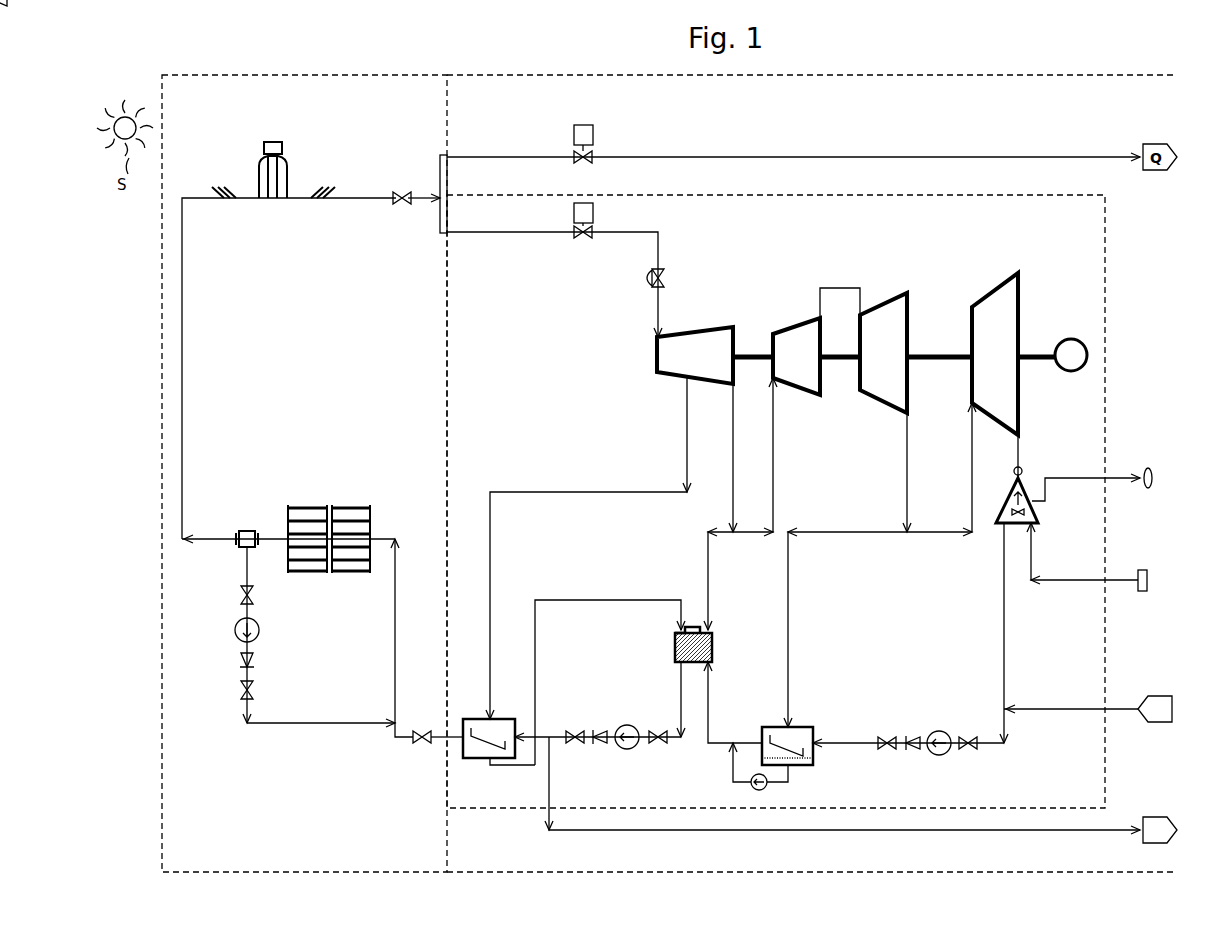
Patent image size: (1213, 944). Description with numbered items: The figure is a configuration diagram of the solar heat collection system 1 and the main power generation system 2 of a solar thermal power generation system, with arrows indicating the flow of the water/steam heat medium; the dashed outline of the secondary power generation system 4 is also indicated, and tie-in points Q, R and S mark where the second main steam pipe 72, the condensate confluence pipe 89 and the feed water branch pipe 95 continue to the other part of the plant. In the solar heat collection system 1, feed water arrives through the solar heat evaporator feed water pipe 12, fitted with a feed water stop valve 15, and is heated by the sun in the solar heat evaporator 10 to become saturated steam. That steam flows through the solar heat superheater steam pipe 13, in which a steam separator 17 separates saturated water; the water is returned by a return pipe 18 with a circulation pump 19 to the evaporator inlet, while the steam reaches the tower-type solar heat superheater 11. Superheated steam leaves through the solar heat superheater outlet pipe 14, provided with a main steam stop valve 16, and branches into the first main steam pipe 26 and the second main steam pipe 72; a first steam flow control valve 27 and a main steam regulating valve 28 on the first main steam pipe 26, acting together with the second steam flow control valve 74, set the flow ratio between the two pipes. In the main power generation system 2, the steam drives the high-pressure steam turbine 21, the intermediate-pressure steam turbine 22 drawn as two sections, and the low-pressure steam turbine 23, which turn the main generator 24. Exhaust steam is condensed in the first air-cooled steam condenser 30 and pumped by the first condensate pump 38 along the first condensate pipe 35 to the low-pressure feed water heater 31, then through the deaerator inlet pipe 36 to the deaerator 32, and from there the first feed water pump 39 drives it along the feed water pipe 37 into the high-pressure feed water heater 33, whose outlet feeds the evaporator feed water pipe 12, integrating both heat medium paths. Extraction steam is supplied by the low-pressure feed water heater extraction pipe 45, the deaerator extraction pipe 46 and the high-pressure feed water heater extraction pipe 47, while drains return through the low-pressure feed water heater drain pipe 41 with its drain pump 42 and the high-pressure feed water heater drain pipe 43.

The solar heat collection system 1 is at (353, 106).
The main power generation system 2 is at (821, 224).
The secondary power generation system 4 is at (821, 108).
The solar heat evaporator 10 is at (360, 504).
The solar heat superheater 11 is at (281, 141).
The solar heat evaporator feed water pipe 12 is at (397, 584).
The solar heat superheater steam pipe 13 is at (185, 380).
The solar heat superheater outlet pipe 14 is at (373, 196).
The feed water stop valve 15 is at (420, 731).
The main steam stop valve 16 is at (406, 191).
The steam separator 17 is at (246, 530).
The return pipe 18 is at (323, 722).
The circulation pump 19 is at (262, 632).
The high-pressure steam turbine 21 is at (696, 326).
The intermediate-pressure steam turbine 22 is at (784, 326).
The low-pressure steam turbine 23 is at (990, 292).
The main generator 24 is at (1072, 338).
The first main steam pipe 26 is at (515, 236).
The first steam flow control valve 27 is at (595, 216).
The main steam regulating valve 28 is at (646, 280).
The first air-cooled steam condenser 30 is at (1022, 473).
The low-pressure feed water heater 31 is at (800, 723).
The deaerator 32 is at (714, 642).
The high-pressure feed water heater 33 is at (472, 762).
The first condensate pipe 35 is at (1002, 622).
The deaerator inlet pipe 36 is at (710, 693).
The feed water pipe 37 is at (679, 686).
The first condensate pump 38 is at (942, 729).
The first feed water pump 39 is at (625, 723).
The low-pressure feed water heater drain pipe 41 is at (730, 780).
The drain pump 42 is at (766, 788).
The high-pressure feed water heater drain pipe 43 is at (588, 600).
The low-pressure feed water heater extraction pipe 45 is at (790, 579).
The deaerator extraction pipe 46 is at (710, 578).
The high-pressure feed water heater extraction pipe 47 is at (492, 570).
The second main steam pipe 72 is at (509, 156).
The second steam flow control valve 74 is at (595, 132).
The condensate confluence pipe 89 is at (1062, 708).
The feed water branch pipe 95 is at (866, 833).